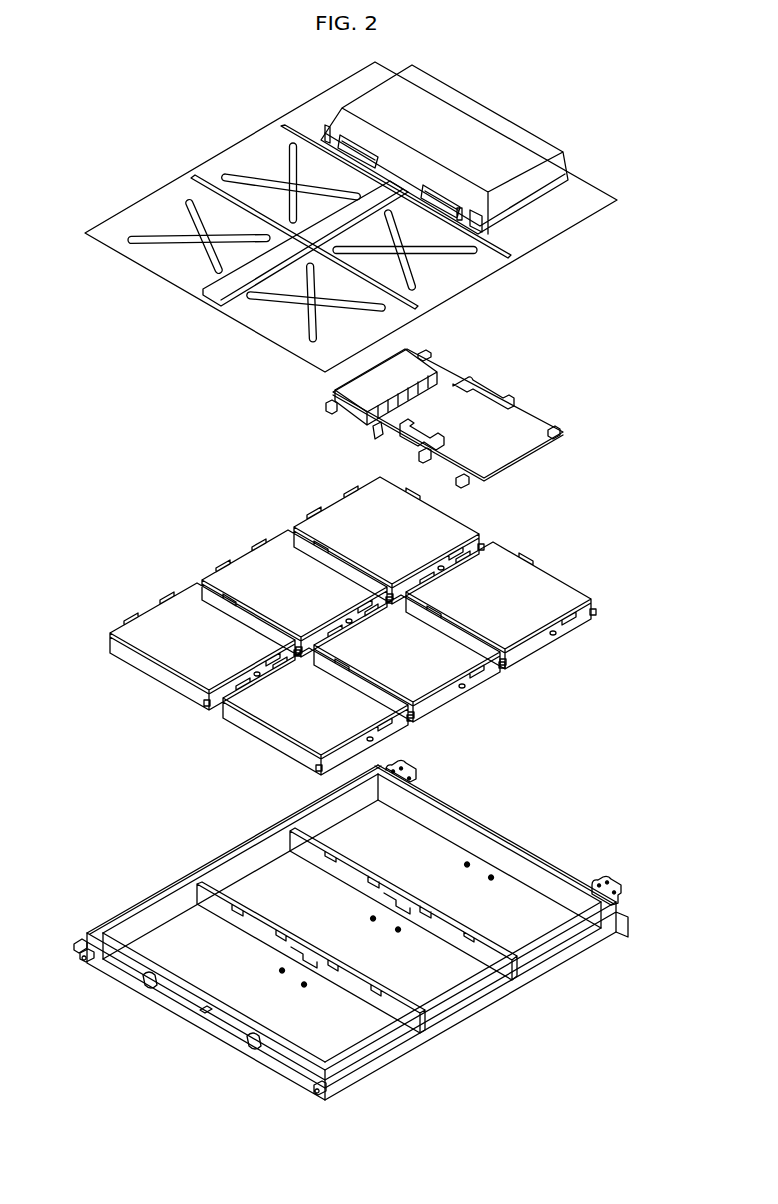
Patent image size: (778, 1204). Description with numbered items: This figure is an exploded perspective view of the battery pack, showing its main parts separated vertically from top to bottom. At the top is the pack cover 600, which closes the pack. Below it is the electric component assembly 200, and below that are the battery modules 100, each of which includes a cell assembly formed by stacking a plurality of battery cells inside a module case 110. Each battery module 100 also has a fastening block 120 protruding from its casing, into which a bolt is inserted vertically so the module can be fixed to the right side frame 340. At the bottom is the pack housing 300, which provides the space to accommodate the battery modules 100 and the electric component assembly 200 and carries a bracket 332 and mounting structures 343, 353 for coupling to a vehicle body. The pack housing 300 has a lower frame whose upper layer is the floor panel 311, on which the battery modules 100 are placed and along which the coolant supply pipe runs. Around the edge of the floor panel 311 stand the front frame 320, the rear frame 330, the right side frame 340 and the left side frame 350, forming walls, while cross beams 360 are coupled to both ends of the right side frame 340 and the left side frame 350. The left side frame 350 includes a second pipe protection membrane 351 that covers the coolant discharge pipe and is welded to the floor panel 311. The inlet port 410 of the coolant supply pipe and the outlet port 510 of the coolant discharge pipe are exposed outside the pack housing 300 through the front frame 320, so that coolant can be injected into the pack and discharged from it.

The battery module 100 is at (376, 626).
The module case 110 is at (531, 574).
The fastening block 120 is at (597, 616).
The electric component assembly 200 is at (543, 361).
The pack housing 300 is at (343, 934).
The floor panel 311 is at (437, 852).
The front frame 320 is at (280, 1062).
The rear frame 330 is at (529, 856).
The bracket 332 is at (428, 755).
The right side frame 340 is at (508, 974).
The mounting structure 343 is at (486, 1014).
The left side frame 350 is at (226, 862).
The second pipe protection membrane 351 is at (149, 922).
The mounting structure 353 is at (80, 944).
The cross beam 360 is at (288, 830).
The inlet port 410 is at (314, 1092).
The outlet port 510 is at (78, 958).
The pack cover 600 is at (248, 153).